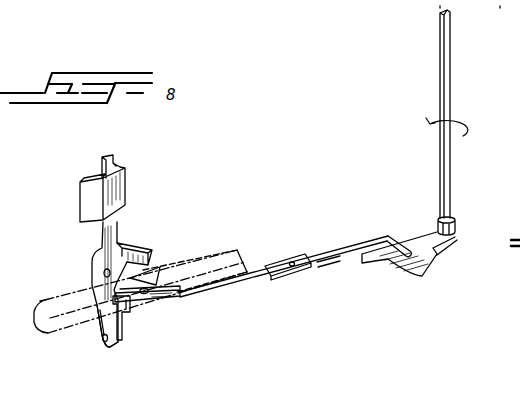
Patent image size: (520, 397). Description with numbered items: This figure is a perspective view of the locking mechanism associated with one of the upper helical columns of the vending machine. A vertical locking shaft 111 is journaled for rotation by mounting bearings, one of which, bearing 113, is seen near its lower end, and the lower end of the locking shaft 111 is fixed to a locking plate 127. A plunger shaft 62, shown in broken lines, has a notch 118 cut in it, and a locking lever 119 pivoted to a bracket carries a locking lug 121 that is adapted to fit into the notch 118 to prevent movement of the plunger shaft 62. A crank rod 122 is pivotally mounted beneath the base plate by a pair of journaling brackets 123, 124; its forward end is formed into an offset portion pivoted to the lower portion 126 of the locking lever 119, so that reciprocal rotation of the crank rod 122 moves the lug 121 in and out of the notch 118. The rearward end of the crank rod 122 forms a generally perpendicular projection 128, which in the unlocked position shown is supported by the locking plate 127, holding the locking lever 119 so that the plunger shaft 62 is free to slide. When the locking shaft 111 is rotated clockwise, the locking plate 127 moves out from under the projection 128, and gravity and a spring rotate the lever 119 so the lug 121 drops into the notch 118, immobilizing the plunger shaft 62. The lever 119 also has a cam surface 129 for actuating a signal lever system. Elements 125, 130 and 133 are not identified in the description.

The plunger shaft 62 is at (73, 318).
The locking shaft 111 is at (447, 96).
The mounting bearing 113 is at (456, 227).
The notch 118 is at (203, 249).
The locking lever 119 is at (90, 267).
The locking lug 121 is at (150, 252).
The crank rod 122 is at (230, 281).
The journaling bracket 123 is at (155, 300).
The journaling bracket 124 is at (313, 265).
The hook 125 is at (108, 347).
The lower portion of locking lever 126 is at (124, 336).
The locking plate 127 is at (390, 258).
The projection 128 is at (407, 251).
The cam surface 129 is at (127, 182).
The member 130 is at (439, 4).
The member 133 is at (498, 4).